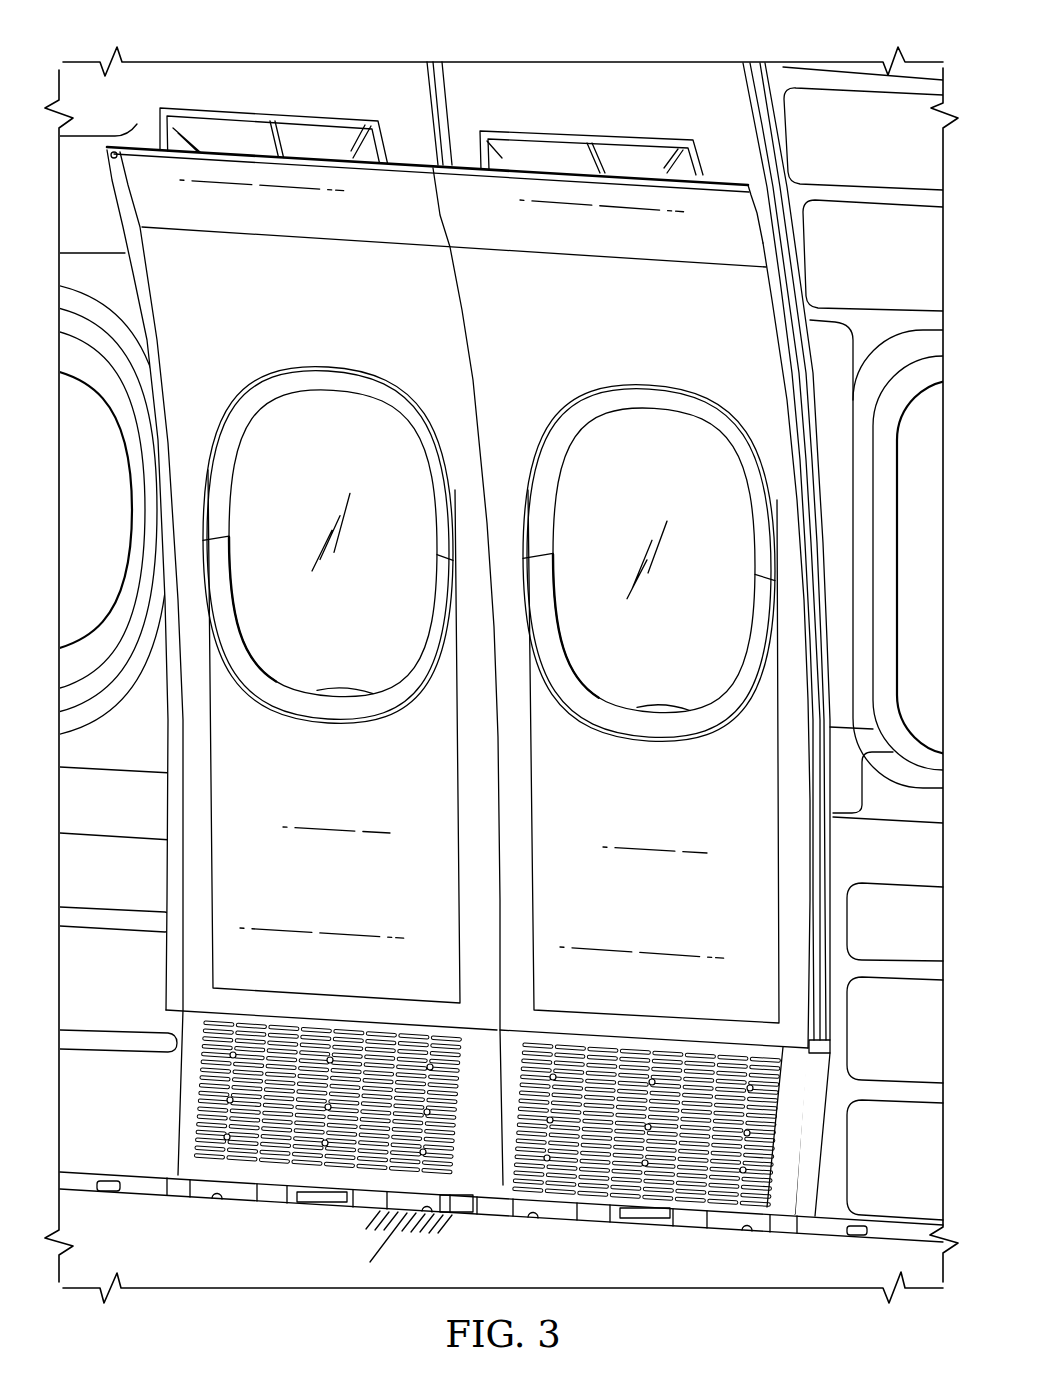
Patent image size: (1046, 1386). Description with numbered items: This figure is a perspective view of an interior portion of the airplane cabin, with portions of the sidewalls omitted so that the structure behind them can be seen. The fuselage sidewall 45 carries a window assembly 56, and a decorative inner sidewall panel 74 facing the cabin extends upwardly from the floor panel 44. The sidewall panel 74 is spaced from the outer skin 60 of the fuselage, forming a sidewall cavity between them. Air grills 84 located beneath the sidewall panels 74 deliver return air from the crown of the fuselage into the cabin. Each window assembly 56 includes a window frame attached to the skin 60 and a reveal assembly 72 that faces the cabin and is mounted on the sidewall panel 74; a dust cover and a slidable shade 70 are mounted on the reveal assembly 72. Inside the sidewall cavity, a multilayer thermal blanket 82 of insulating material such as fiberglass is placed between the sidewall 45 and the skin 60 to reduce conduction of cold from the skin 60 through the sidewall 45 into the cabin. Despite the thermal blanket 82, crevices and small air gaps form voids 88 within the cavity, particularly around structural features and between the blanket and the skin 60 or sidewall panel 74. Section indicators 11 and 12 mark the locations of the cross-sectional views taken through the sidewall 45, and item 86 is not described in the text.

The floor panel 44 is at (887, 1257).
The sidewall 45 is at (236, 90).
The outer skin 60 is at (560, 77).
The overhead stowage bin 86 is at (617, 140).
The thermal blanket 82 is at (795, 303).
The window assembly 56 is at (704, 398).
The inner sidewall panel 74 is at (738, 234).
The voids 88 is at (775, 192).
The reveal assembly 72 is at (660, 404).
The slidable shade 70 is at (318, 411).
The air grills 84 is at (290, 1150).
The section line 11- 11 is at (172, 350).
The section line 12- 12 is at (483, 530).